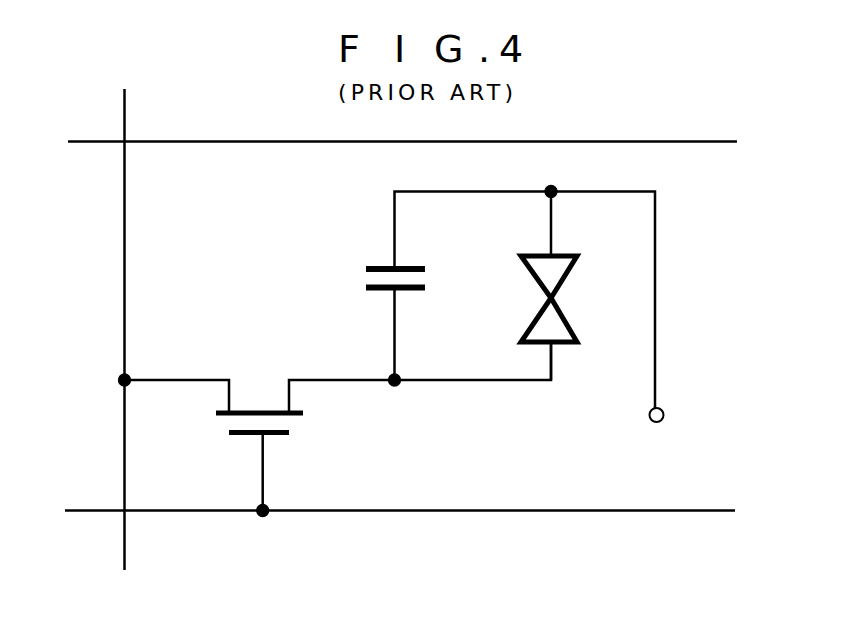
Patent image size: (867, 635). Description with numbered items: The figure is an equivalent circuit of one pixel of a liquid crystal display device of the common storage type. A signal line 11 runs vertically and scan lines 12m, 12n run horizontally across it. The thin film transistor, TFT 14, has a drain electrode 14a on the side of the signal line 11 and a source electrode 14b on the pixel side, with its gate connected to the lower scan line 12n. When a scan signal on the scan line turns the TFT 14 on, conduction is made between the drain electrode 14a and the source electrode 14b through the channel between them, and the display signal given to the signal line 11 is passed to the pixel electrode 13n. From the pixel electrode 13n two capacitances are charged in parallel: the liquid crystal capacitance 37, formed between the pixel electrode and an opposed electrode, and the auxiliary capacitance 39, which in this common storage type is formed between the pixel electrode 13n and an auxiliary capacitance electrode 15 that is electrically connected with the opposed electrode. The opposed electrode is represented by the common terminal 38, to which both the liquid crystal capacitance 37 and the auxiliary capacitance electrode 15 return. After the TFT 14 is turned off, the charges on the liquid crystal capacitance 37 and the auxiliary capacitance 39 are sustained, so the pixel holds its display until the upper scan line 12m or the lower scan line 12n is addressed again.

The signal line 11 is at (126, 114).
The scan line 12m is at (717, 140).
The scan line 12n is at (713, 512).
The pixel electrode 13n is at (553, 346).
The TFT 14 is at (285, 436).
The drain electrode 14a is at (228, 398).
The source electrode 14b is at (290, 400).
The auxiliary capacitance electrode 15 is at (395, 268).
The liquid crystal capacitance 37 is at (560, 306).
The common electrode terminal Vcom 38 is at (664, 412).
The auxiliary capacitance 39 is at (371, 262).